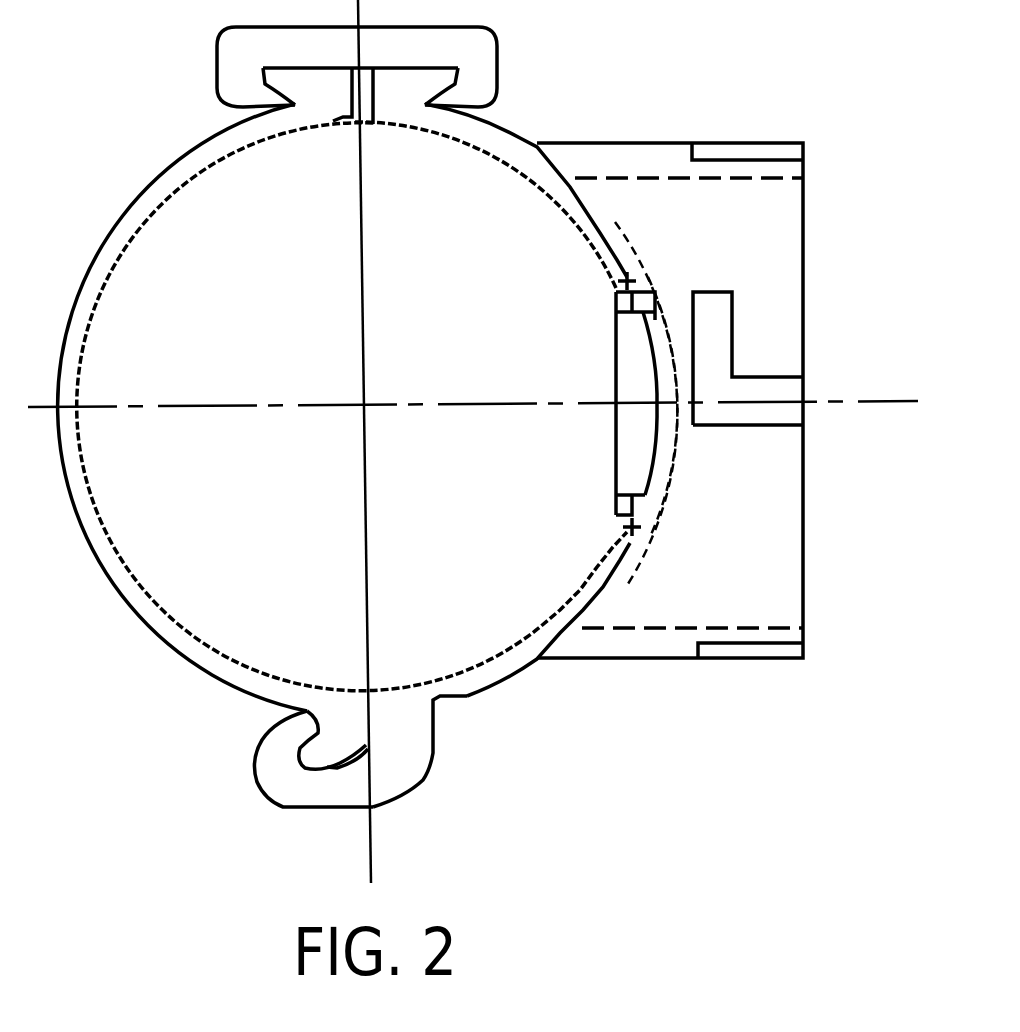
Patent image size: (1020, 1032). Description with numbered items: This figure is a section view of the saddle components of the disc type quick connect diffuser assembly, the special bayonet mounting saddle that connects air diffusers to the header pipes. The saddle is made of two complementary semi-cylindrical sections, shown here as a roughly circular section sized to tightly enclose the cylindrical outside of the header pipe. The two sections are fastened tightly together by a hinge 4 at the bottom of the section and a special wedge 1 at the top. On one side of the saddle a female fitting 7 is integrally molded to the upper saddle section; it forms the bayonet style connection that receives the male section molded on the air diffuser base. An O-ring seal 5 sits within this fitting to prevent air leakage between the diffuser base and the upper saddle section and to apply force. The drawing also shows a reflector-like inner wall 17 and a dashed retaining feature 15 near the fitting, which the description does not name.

The special wedge 1 is at (497, 50).
The hinge 4 is at (373, 807).
The reflector 17 is at (188, 183).
The female fitting 7 is at (806, 401).
The retaining ring 15 is at (680, 492).
The O-ring seal 5 is at (638, 530).